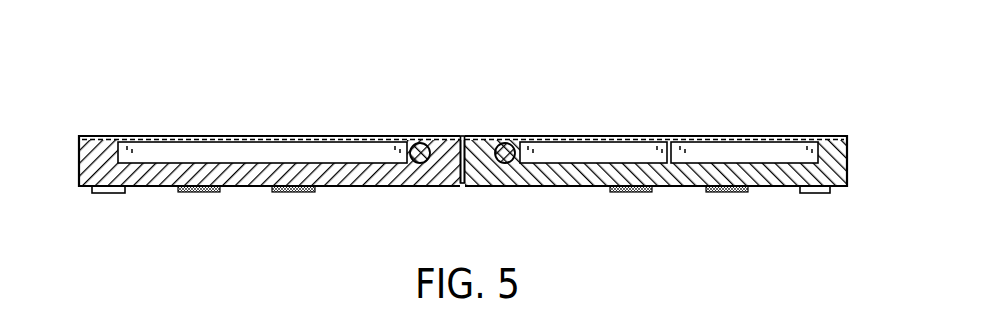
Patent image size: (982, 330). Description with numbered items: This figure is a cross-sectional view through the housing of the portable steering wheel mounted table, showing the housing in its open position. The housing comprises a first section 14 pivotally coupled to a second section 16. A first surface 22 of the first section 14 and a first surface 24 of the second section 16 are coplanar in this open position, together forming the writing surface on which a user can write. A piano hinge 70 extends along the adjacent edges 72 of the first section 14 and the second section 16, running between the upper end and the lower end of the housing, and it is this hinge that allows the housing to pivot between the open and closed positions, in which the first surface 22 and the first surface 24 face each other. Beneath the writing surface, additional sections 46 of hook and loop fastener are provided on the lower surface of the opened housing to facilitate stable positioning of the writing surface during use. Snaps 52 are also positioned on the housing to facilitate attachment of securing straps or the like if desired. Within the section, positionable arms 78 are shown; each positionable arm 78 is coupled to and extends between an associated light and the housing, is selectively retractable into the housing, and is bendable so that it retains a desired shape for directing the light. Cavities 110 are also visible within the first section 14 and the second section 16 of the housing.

The first section 14 is at (79, 163).
The second section 16 is at (848, 160).
The first surface of the first section 22 is at (180, 130).
The first surface of the second section 24 is at (650, 126).
The sections of hook and loop fastener 46 is at (296, 194).
The snaps 52 is at (818, 195).
The piano hinge 70 is at (463, 137).
The adjacent edges 72 is at (445, 187).
The positionable arm 78 is at (418, 138).
The cavities 110 is at (211, 138).